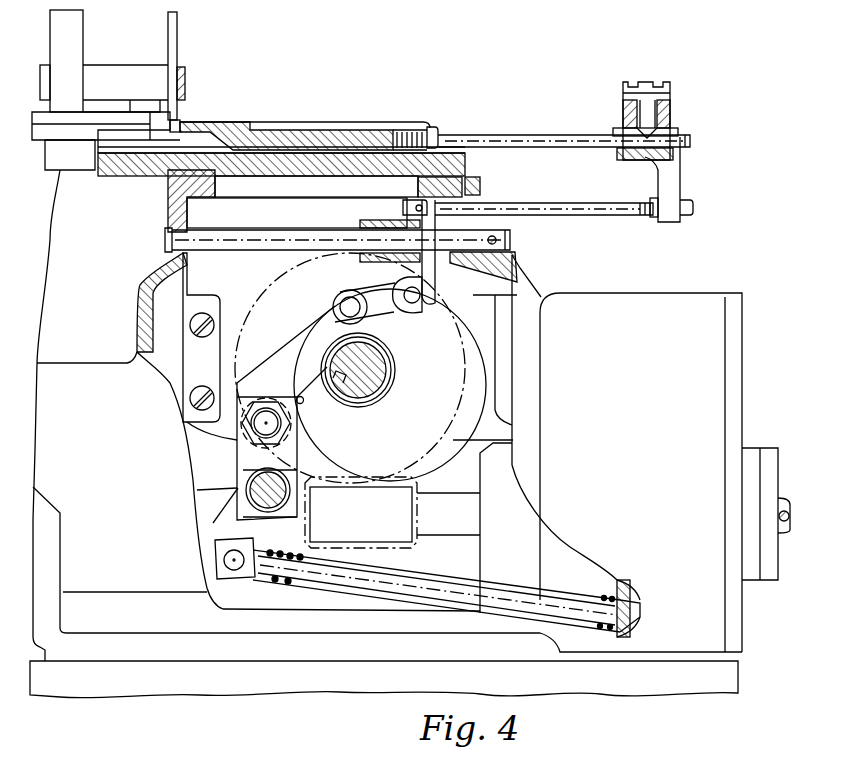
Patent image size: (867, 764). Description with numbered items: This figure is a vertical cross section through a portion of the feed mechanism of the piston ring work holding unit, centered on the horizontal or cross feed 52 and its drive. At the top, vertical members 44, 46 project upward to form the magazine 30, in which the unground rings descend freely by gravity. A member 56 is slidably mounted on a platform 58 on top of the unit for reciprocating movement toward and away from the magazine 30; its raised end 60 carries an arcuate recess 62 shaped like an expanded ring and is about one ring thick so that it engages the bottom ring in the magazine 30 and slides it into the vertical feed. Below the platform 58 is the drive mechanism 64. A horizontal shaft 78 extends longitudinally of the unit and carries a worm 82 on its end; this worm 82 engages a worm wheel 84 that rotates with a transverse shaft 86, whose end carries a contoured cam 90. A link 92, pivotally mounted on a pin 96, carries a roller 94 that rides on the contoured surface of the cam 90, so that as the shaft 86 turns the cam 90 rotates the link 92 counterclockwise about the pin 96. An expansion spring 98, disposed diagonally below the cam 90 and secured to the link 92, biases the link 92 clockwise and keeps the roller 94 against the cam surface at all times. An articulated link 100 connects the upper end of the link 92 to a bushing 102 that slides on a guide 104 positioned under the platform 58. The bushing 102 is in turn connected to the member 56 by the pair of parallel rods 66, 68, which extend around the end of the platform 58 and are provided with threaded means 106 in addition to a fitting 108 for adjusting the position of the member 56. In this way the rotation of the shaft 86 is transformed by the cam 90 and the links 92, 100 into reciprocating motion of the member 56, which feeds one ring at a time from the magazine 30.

The magazine 30 is at (115, 78).
The vertical member 44 is at (78, 45).
The vertical member 46 is at (178, 50).
The horizontal or cross feed 52 is at (300, 119).
The member 56 is at (362, 122).
The platform 58 is at (465, 170).
The raised end 60 is at (212, 120).
The arcuate recess 62 is at (182, 118).
The drive mechanism 64 is at (478, 268).
The rod 66 is at (510, 140).
The rod 68 is at (550, 205).
The horizontal shaft 78 is at (437, 500).
The worm 82 is at (418, 546).
The worm wheel 84 is at (293, 288).
The shaft 86 is at (372, 388).
The contoured cam 90 is at (480, 375).
The link 92 is at (270, 360).
The roller 94 is at (300, 446).
The pin 96 is at (252, 483).
The expansion spring 98 is at (255, 575).
The articulated link 100 is at (395, 282).
The bushing 102 is at (378, 224).
The guide 104 is at (250, 235).
The threaded means 106 is at (438, 132).
The fitting 108 is at (665, 105).